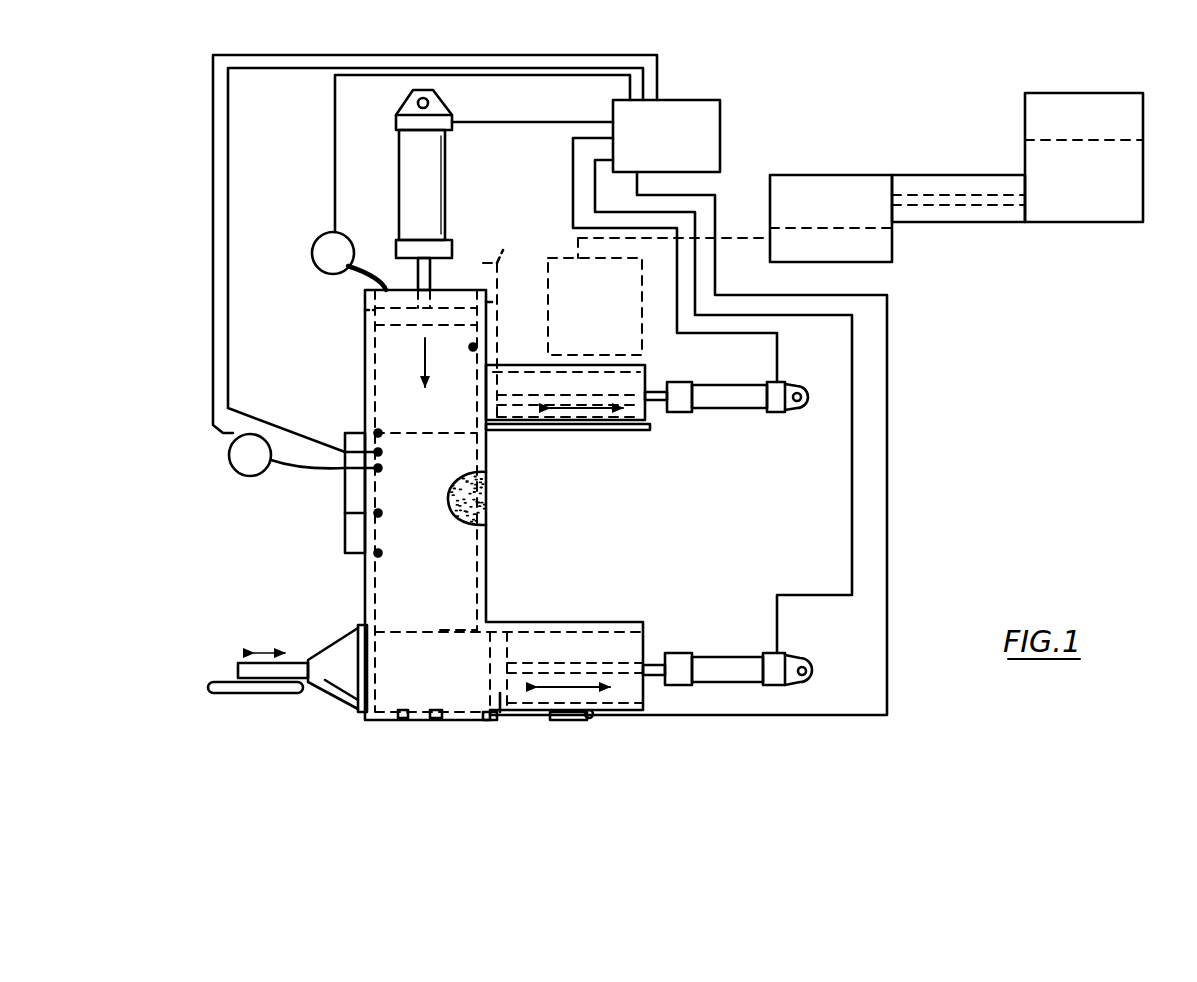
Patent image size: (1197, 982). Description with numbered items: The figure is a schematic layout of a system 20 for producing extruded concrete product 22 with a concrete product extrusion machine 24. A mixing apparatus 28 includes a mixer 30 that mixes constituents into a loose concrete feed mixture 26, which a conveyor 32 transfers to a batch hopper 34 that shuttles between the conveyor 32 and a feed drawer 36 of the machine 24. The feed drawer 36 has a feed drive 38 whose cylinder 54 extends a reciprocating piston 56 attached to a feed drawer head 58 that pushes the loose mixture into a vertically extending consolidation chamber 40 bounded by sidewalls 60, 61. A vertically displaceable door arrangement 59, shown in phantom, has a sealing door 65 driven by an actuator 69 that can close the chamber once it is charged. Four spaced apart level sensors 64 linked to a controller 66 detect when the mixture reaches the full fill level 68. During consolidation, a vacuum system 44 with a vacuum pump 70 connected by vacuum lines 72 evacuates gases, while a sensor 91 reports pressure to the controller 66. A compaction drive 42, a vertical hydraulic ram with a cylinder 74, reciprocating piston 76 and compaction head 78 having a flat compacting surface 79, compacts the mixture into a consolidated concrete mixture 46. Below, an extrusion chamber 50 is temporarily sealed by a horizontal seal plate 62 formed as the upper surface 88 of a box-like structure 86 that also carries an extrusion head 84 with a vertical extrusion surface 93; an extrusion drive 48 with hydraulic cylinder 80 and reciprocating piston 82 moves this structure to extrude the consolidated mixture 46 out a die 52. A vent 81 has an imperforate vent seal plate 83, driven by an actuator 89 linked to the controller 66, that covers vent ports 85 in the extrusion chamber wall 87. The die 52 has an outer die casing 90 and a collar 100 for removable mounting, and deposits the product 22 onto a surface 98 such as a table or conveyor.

The system 20 is at (962, 478).
The extruded concrete product 22 is at (243, 652).
The concrete product extrusion machine 24 is at (528, 528).
The loose concrete feed mixture 26 is at (930, 190).
The mixing apparatus 28 is at (1093, 168).
The mixer 30 is at (1134, 93).
The conveyor 32 is at (980, 178).
The batch hopper 34 is at (557, 254).
The feed drawer 36 is at (644, 365).
The feed drive 38 is at (733, 426).
The consolidation chamber 40 is at (505, 488).
The compaction drive 42 is at (424, 188).
The vacuum system 44 is at (312, 254).
The consolidated concrete mixture 46 is at (487, 505).
The extrusion drive 48 is at (727, 652).
The extrusion chamber 50 is at (422, 720).
The die 52 is at (317, 673).
The cylinder 54 is at (725, 409).
The reciprocating piston 56 is at (658, 401).
The feed drawer head 58 is at (478, 398).
The vertically displaceable door arrangement 59 is at (490, 254).
The consolidation chamber sidewall 60 is at (466, 505).
The consolidation chamber sidewall 61 is at (473, 347).
The seal plate 62 is at (440, 630).
The level sensors 64 is at (391, 469).
The sealing door 65 is at (497, 302).
The controller 66 is at (650, 148).
The full fill level 68 is at (458, 428).
The actuator 69 is at (513, 243).
The vacuum pump 70 is at (312, 257).
The vacuum lines 72 is at (362, 278).
The cylinder 74 is at (447, 143).
The reciprocating piston 76 is at (428, 270).
The compaction head 78 is at (375, 310).
The compacting surface 79 is at (403, 359).
The hydraulic cylinder 80 is at (707, 655).
The vent 81 is at (365, 744).
The reciprocating piston 82 is at (653, 660).
The vent seal plate 83 is at (452, 720).
The extrusion head 84 is at (500, 722).
The vent ports 85 is at (402, 710).
The box-like structure 86 is at (566, 641).
The extrusion chamber wall 87 is at (435, 712).
The upper surface 88 is at (533, 630).
The actuator 89 is at (575, 728).
The outer die casing 90 is at (323, 681).
The sensor 91 is at (378, 452).
The extrusion surface 93 is at (473, 715).
The surface 98 is at (218, 694).
The collar 100 is at (338, 688).